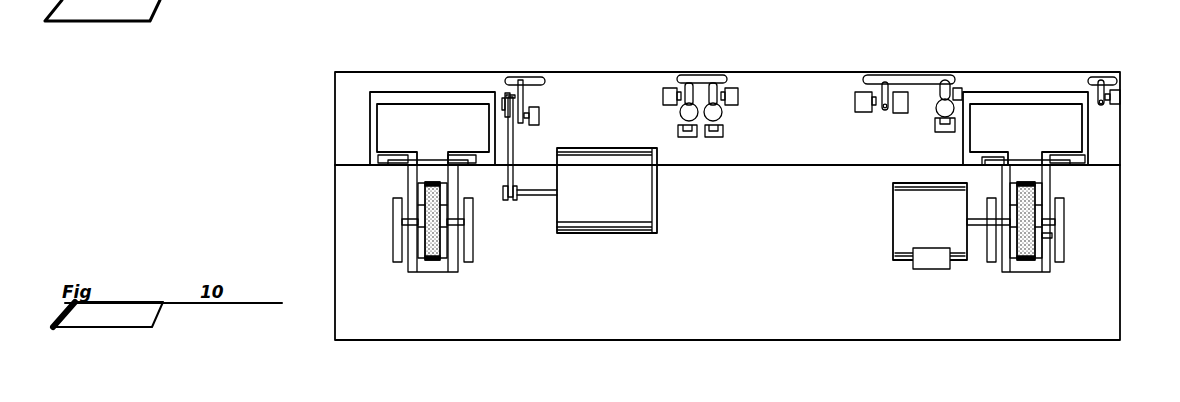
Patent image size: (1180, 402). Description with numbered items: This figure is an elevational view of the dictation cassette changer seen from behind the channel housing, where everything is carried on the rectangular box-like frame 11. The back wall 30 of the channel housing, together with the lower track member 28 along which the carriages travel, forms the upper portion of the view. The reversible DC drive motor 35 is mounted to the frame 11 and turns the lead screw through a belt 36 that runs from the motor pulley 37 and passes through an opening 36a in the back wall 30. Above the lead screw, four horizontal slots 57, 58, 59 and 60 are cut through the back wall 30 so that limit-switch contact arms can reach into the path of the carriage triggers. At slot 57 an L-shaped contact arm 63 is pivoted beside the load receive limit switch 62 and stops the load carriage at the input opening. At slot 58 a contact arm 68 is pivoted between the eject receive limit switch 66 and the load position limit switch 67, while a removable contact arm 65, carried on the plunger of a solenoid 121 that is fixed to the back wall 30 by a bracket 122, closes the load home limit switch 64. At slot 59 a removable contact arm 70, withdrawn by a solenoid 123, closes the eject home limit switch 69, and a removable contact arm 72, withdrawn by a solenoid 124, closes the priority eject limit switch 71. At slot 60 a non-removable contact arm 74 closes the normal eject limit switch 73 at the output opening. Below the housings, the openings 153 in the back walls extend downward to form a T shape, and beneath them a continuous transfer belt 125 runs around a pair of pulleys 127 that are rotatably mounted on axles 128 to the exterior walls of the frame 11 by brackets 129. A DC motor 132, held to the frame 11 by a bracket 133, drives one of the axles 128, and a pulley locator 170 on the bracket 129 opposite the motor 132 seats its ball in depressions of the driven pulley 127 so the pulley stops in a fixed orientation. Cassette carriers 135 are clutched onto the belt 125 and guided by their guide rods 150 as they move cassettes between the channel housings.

The frame 11 is at (337, 262).
The lower track member 28 is at (383, 163).
The back wall 30 is at (337, 93).
The reversible DC drive motor 35 is at (620, 215).
The belt 36 is at (514, 152).
The opening 36a is at (507, 95).
The motor pulley 37 is at (505, 198).
The slot 57 is at (1090, 78).
The slot 58 is at (872, 75).
The slot 59 is at (700, 75).
The slot 60 is at (523, 78).
The load receive limit switch 62 is at (1120, 96).
The L-shaped contact arm 63 is at (1101, 80).
The load home limit switch 64 is at (957, 88).
The L-shaped contact arm 65 is at (946, 80).
The eject receive limit switch 66 is at (900, 113).
The load position limit switch 67 is at (855, 98).
The L-shaped contact arm 68 is at (882, 110).
The eject home limit switch 69 is at (740, 90).
The removable contact arm 70 is at (713, 82).
The priority eject limit switch 71 is at (663, 95).
The removable contact arm 72 is at (689, 82).
The normal eject limit switch 73 is at (540, 116).
The non-removable contact arm 74 is at (524, 97).
The solenoid 121 is at (941, 100).
The bracket 122 is at (718, 137).
The solenoid 123 is at (723, 113).
The solenoid 124 is at (680, 113).
The transfer belt 125 is at (433, 262).
The pulleys 127 is at (418, 262).
The axles 128 is at (455, 226).
The brackets 129 is at (395, 232).
The DC motor 132 is at (900, 214).
The bracket 133 is at (922, 258).
The cassette carriers 135 is at (390, 128).
The guide rods 150 is at (398, 166).
The openings 153 is at (430, 92).
The pulley locator 170 is at (1048, 240).